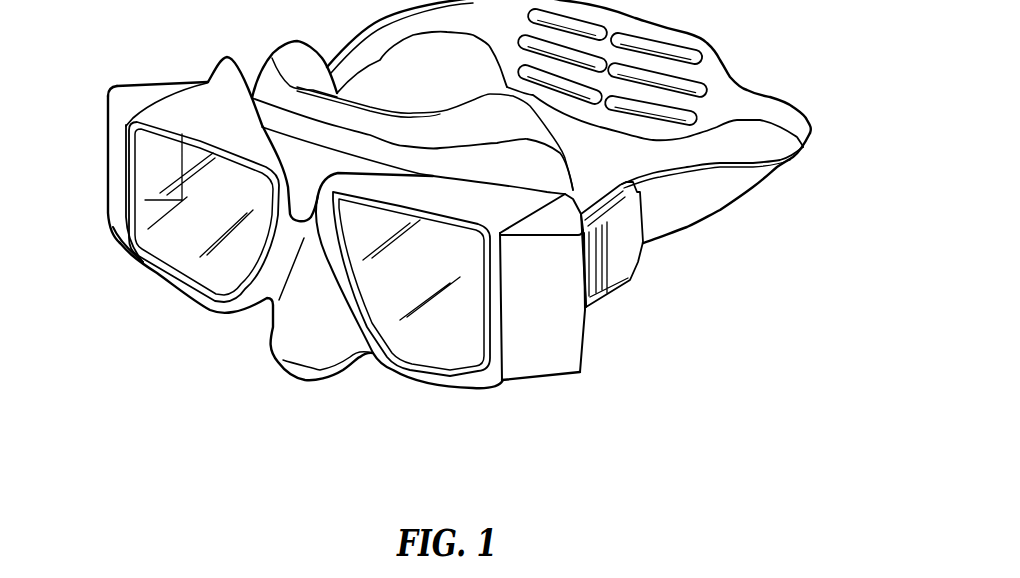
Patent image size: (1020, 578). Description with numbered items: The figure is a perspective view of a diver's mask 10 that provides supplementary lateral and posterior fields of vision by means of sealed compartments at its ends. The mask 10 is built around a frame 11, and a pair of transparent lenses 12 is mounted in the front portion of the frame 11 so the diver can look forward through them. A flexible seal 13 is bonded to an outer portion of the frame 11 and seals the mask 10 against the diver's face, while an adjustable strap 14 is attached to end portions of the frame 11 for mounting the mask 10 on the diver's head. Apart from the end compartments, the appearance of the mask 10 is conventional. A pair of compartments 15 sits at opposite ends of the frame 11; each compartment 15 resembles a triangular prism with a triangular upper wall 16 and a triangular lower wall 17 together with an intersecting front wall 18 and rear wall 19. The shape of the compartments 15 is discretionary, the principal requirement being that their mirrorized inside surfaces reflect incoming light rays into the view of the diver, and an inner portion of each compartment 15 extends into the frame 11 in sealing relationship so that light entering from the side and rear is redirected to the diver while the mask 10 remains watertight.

The diver's mask 10 is at (157, 403).
The frame 11 is at (203, 303).
The transparent lenses 12 is at (183, 242).
The flexible seal 13 is at (370, 100).
The adjustable strap 14 is at (720, 213).
The compartments 15 is at (122, 173).
The upper wall 16 is at (127, 93).
The lower wall 17 is at (117, 233).
The front wall 18 is at (122, 122).
The rear wall 19 is at (158, 82).